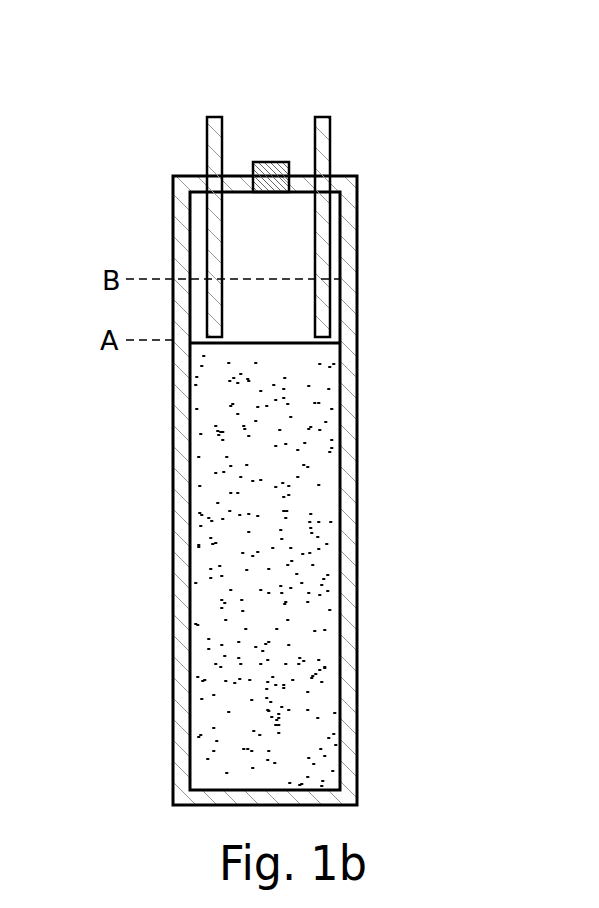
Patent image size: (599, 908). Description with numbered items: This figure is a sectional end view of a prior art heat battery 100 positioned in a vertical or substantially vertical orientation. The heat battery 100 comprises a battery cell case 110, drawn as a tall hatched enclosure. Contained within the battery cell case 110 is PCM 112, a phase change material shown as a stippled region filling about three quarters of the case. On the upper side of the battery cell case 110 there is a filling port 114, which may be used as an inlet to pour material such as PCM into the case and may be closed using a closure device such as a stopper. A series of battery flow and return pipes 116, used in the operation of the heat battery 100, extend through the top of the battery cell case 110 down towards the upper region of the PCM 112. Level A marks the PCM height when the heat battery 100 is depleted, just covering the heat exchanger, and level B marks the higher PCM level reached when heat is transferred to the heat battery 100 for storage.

The heat battery 100 is at (417, 323).
The battery cell case 110 is at (173, 631).
The PCM 112 is at (218, 486).
The filling port 114 is at (275, 162).
The battery flow and return pipes 116 is at (213, 117).